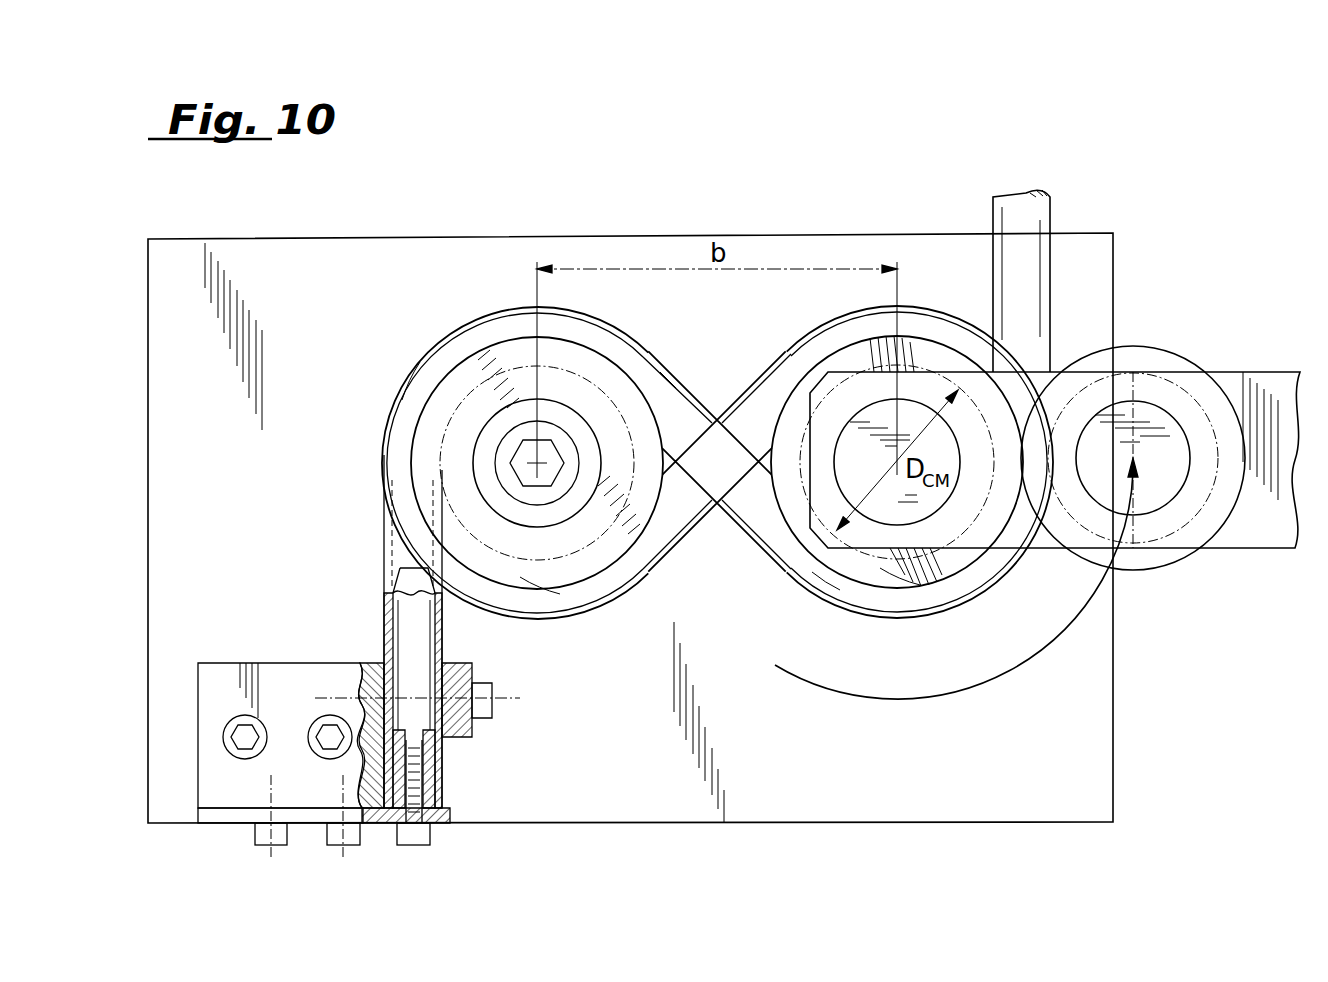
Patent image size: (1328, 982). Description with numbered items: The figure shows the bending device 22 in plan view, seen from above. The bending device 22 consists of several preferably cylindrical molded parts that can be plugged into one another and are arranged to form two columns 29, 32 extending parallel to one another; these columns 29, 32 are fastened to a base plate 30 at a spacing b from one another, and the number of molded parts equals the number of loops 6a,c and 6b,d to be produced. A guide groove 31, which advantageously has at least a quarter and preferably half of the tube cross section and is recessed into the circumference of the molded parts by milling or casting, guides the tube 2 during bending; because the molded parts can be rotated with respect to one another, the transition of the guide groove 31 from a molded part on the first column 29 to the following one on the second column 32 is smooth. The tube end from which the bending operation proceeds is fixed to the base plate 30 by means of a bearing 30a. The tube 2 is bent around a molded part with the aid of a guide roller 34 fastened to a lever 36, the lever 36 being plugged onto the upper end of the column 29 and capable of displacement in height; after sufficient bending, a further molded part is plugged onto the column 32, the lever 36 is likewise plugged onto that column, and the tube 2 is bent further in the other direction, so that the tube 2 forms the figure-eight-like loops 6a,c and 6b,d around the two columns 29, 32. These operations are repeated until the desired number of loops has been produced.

The tube 2 is at (384, 556).
The bending device 22 is at (1127, 200).
The first column 29 is at (465, 310).
The second column 32 is at (830, 305).
The loops 6a,c is at (396, 400).
The loops 6b,d is at (803, 585).
The guide groove 31 is at (546, 563).
The base plate 30 is at (572, 806).
The bearing 30a is at (237, 798).
The guide roller 34 is at (1143, 355).
The lever 36 is at (1282, 375).